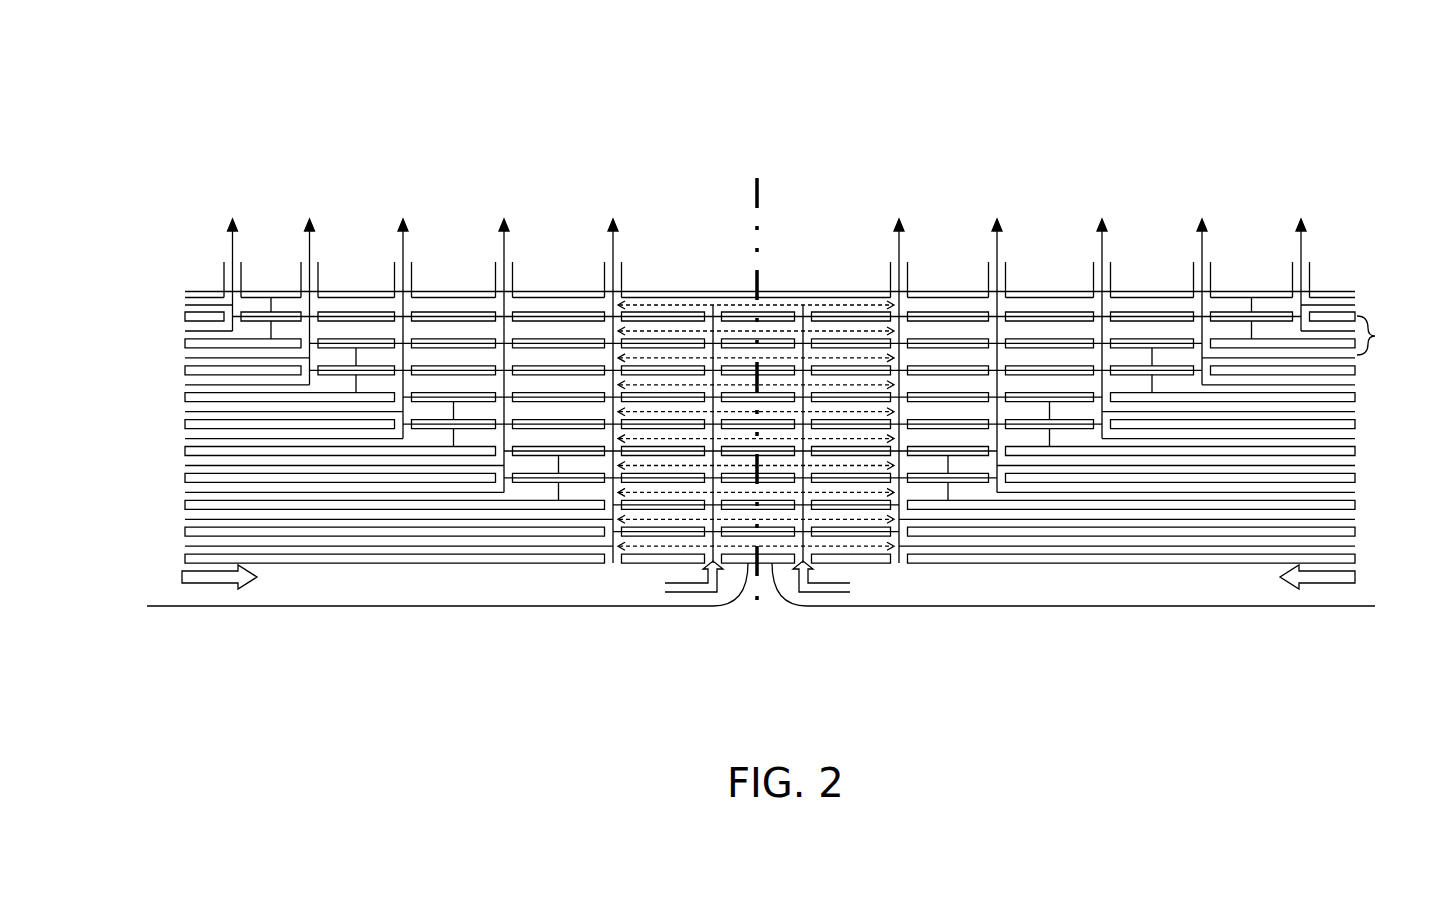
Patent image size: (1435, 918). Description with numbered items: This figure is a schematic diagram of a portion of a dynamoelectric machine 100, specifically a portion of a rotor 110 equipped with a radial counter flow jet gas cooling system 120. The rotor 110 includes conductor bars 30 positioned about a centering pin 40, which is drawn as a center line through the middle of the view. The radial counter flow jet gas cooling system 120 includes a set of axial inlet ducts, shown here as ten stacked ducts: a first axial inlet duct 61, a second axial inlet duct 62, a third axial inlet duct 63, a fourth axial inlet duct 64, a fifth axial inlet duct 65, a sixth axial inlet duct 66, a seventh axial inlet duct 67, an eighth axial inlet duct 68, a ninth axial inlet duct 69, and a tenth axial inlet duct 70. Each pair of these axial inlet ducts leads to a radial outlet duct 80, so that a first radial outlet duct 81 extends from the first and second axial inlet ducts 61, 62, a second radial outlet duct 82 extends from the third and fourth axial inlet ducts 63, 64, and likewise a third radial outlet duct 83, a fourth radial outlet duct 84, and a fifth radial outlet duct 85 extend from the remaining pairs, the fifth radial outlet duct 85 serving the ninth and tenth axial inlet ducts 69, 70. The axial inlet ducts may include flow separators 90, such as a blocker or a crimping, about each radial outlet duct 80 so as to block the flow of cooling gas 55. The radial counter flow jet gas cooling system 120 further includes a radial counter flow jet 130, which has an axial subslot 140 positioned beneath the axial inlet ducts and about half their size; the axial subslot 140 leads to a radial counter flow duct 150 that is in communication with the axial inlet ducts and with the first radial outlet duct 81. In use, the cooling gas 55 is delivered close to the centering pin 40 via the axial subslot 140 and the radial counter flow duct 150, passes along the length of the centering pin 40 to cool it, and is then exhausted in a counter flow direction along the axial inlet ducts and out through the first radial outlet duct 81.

The dynamoelectric machine 100 is at (182, 98).
The tenth axial inlet duct 70 is at (185, 305).
The ninth axial inlet duct 69 is at (185, 331).
The eighth axial inlet duct 68 is at (185, 358).
The seventh axial inlet duct 67 is at (185, 385).
The sixth axial inlet duct 66 is at (185, 412).
The fifth axial inlet duct 65 is at (185, 439).
The fourth axial inlet duct 64 is at (185, 466).
The third axial inlet duct 63 is at (185, 492).
The second axial inlet duct 62 is at (185, 519).
The first axial inlet duct 61 is at (185, 546).
The fifth radial outlet duct 85 is at (232, 255).
The fourth radial outlet duct 84 is at (310, 255).
The third radial outlet duct 83 is at (403, 255).
The second radial outlet duct 82 is at (504, 255).
The first radial outlet duct 81 is at (613, 255).
The cooling gas 55 is at (1301, 255).
The flow separator 90 is at (1253, 337).
The conductor bars 30 is at (1375, 336).
The radial counter flow duct 150 is at (711, 330).
The centering pin 40 is at (758, 190).
The radial outlet duct 80 is at (605, 552).
The radial counter flow jet 130 is at (718, 606).
The axial subslot 140 is at (306, 585).
The radial counter flow jet gas cooling system 120 is at (371, 590).
The rotor 110 is at (449, 611).